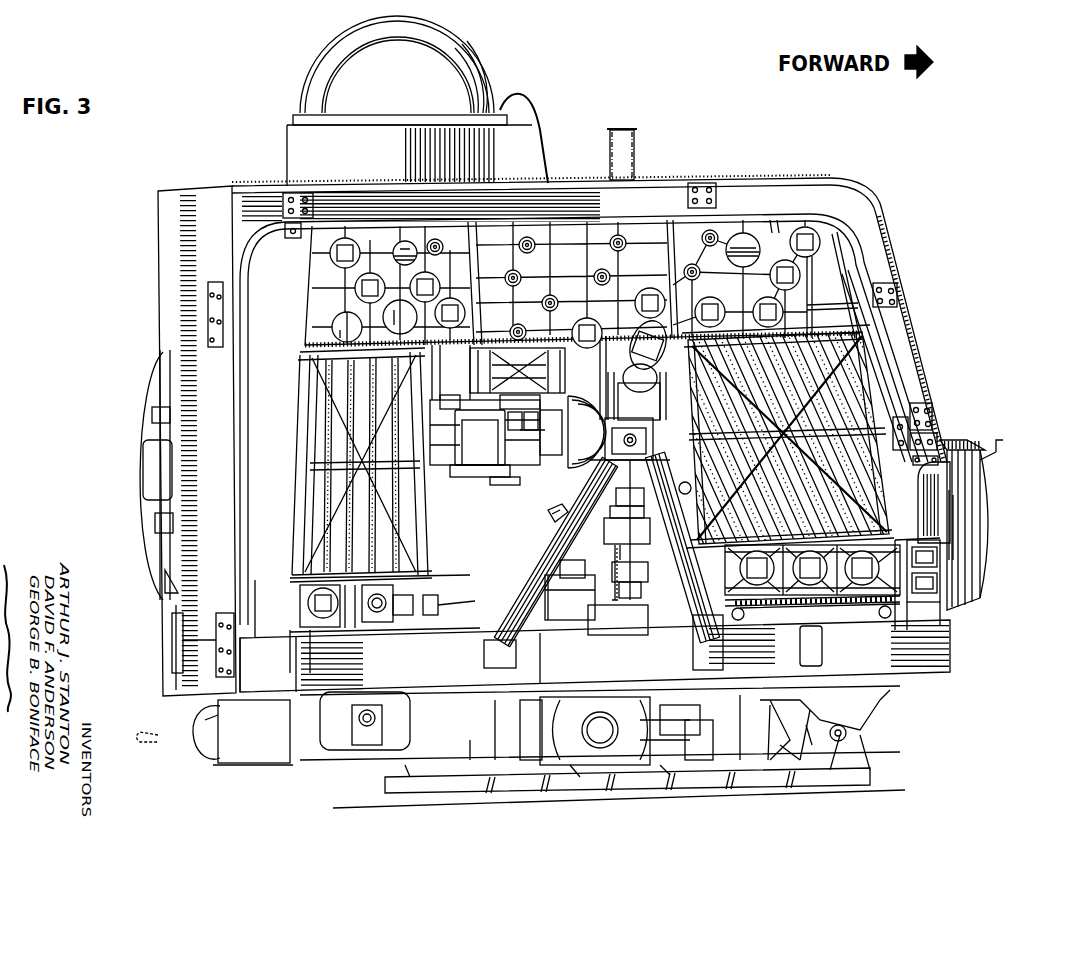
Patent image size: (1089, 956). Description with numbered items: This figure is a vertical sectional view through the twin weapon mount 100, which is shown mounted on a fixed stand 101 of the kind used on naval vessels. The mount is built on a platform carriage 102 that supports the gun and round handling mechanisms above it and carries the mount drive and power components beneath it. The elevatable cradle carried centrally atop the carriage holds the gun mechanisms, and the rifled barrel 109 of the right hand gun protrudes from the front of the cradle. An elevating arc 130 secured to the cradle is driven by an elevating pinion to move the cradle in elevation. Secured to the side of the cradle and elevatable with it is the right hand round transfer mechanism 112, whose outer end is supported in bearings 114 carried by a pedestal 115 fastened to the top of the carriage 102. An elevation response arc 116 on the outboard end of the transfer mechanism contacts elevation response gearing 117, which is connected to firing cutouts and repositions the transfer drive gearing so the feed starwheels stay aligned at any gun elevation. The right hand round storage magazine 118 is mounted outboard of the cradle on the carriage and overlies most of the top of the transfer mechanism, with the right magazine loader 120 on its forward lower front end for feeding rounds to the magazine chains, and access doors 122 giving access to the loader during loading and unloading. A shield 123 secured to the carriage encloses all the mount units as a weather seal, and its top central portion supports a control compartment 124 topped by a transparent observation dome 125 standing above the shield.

The twin weapon mount 100 is at (544, 458).
The fixed stand 101 is at (840, 787).
The platform carriage 102 is at (955, 644).
The rifled barrel 109 is at (784, 117).
The right hand round transfer mechanism 112 is at (447, 549).
The bearings 114 is at (607, 407).
The pedestal 115 is at (534, 558).
The elevation response arc 116 is at (570, 473).
The elevation response gearing 117 is at (600, 510).
The right hand round storage magazine 118 is at (864, 145).
The right magazine loader 120 is at (950, 481).
The access doors 122 is at (985, 568).
The shield 123 is at (888, 213).
The control compartment 124 is at (531, 148).
The transparent observation dome 125 is at (470, 47).
The elevating arc 130 is at (549, 517).